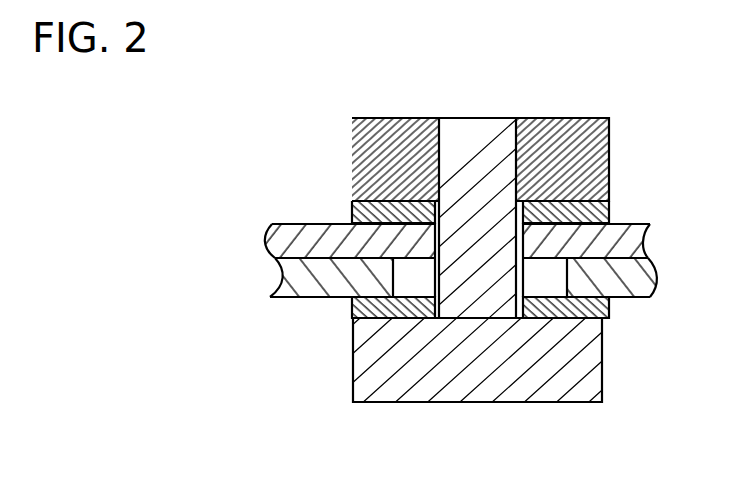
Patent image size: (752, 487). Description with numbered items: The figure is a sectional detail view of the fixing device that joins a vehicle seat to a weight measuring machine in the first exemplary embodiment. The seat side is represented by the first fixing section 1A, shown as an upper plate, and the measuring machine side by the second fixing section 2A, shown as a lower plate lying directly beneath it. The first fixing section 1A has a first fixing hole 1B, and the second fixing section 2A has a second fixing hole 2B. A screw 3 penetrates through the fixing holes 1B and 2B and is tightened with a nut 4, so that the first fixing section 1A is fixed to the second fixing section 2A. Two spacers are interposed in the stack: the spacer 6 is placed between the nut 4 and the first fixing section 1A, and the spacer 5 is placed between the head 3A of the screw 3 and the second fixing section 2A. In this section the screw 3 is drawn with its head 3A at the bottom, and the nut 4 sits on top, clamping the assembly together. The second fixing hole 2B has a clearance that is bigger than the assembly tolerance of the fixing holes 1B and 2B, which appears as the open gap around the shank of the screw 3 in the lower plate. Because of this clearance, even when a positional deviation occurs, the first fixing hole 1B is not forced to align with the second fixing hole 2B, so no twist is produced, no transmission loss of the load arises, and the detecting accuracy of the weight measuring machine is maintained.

The first fixing section 1A is at (317, 237).
The first fixing hole 1B is at (607, 238).
The second fixing section 2A is at (320, 275).
The second fixing hole 2B is at (537, 279).
The screw 3 is at (513, 256).
The head of screw 3A is at (585, 352).
The nut 4 is at (585, 163).
The spacer 5 is at (600, 315).
The spacer 6 is at (587, 207).